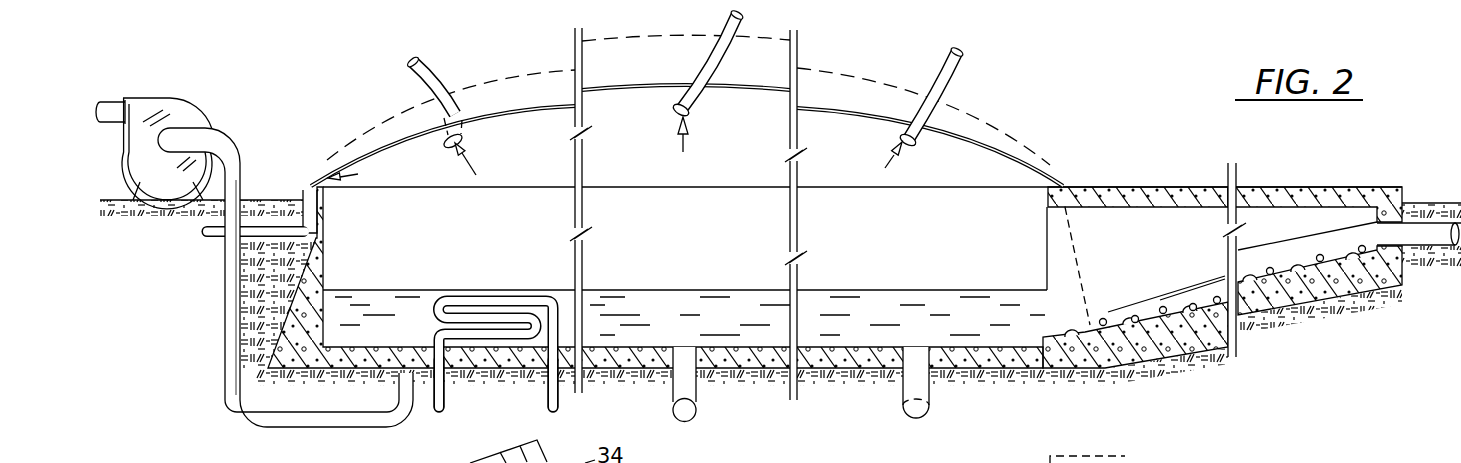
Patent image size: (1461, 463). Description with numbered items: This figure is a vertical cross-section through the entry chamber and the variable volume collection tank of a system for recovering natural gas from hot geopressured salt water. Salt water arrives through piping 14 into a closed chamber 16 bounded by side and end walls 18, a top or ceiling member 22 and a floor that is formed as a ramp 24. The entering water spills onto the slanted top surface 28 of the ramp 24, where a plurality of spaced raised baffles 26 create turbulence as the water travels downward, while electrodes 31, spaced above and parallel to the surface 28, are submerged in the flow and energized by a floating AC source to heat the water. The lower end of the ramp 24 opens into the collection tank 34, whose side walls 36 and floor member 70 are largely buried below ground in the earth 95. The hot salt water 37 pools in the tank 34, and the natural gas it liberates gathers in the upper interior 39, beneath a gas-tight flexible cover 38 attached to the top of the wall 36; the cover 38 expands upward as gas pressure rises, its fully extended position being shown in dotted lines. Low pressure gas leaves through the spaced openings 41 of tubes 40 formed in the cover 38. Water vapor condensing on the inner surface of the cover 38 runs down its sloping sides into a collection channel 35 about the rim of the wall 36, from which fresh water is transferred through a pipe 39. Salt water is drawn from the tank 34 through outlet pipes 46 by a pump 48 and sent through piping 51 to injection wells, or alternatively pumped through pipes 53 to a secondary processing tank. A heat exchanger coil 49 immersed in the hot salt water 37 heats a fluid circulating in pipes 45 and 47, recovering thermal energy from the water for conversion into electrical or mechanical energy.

The piping 14 is at (1433, 220).
The closed chamber 16 is at (1298, 187).
The side and end walls 18 is at (1397, 262).
The top or ceiling member 22 is at (1133, 187).
The ramp 24 is at (1317, 297).
The raised baffles 26 is at (1068, 328).
The top surface 28 is at (1090, 327).
The electrodes 31 is at (1214, 299).
The variable volume collection tank 34 is at (297, 181).
The collection channel 35 is at (357, 173).
The side walls 36 is at (318, 260).
The hot salt water 37 is at (757, 342).
The flexible cover 38 is at (534, 107).
The interior 39 is at (218, 239).
The tubes 40 is at (445, 72).
The spaced openings 41 is at (672, 154).
The pipe 45 is at (444, 399).
The outlet pipes 46 is at (337, 416).
The pipe 47 is at (548, 392).
The pump 48 is at (188, 98).
The heat exchanger coil 49 is at (437, 311).
The piping 51 is at (103, 101).
The pipes 53 is at (693, 384).
The floor member 70 is at (1058, 358).
The earth 95 is at (178, 233).